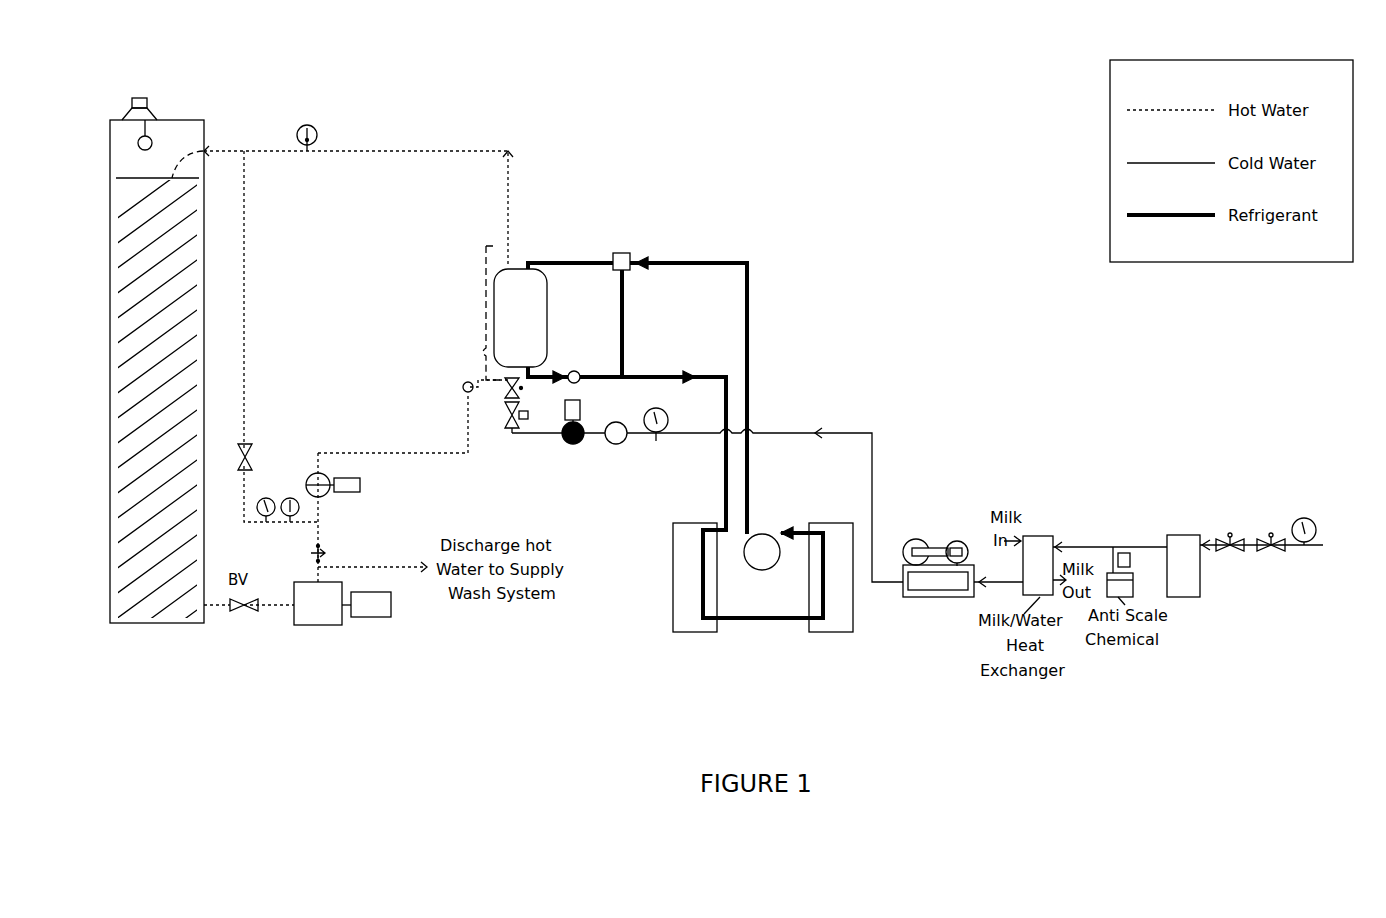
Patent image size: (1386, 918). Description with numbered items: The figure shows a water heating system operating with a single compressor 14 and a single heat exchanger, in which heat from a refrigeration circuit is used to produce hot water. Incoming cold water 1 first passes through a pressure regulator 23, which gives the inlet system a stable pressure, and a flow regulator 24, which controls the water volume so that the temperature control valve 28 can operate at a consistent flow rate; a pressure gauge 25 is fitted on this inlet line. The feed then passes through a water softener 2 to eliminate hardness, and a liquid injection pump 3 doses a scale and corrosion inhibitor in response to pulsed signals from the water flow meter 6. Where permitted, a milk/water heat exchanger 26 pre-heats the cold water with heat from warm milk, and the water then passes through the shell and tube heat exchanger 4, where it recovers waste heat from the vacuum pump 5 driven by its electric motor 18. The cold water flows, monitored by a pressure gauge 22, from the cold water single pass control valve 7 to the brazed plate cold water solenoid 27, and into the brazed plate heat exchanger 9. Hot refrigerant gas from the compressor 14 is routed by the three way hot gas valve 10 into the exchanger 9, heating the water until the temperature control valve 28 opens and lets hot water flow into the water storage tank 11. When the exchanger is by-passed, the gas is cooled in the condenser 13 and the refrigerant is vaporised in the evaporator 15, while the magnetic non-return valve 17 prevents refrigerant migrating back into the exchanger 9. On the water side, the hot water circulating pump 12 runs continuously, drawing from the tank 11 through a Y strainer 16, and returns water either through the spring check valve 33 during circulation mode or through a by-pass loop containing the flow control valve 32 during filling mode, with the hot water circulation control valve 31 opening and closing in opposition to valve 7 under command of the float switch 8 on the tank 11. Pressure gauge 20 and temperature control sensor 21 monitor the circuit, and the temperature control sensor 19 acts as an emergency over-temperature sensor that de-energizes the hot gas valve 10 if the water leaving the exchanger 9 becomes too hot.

The incoming cold water 1 is at (1354, 546).
The water softener 2 is at (1170, 566).
The liquid injection pump 3 is at (1129, 576).
The shell & tube heat exchanger 4 is at (920, 597).
The vacuum pump 5 is at (955, 541).
The water flow meter 6 is at (615, 444).
The cold water single pass control valve 7 is at (572, 445).
The float switch 8 is at (139, 98).
The brazed plate heat exchanger 9 is at (494, 313).
The three way hot gas valve 10 is at (621, 252).
The water storage tank 11 is at (160, 424).
The hot water circulating pump 12 is at (342, 603).
The condenser 13 is at (677, 562).
The compressor 14 is at (759, 570).
The evaporator 15 is at (850, 553).
The Y strainer 16 is at (311, 553).
The magnetic non-return valve 17 is at (577, 370).
The electric motor for vacuum pump 18 is at (916, 540).
The temperature control sensor #2 19 is at (307, 127).
The pressure gauge #1 20 is at (266, 500).
The temperature control sensor #1 21 is at (291, 500).
The pressure gauge #2 22 is at (656, 432).
The pressure regulator 23 is at (1271, 553).
The flow regulator 24 is at (1230, 553).
The pressure gauge #3 25 is at (1304, 542).
The milk/water heat exchanger 26 is at (1034, 533).
The brazed plate cold water solenoid 27 is at (506, 415).
The temperature control valve 28 is at (524, 388).
The hot water circulation control valve 31 is at (360, 486).
The flow control valve 32 is at (240, 457).
The spring check valve 33 is at (463, 388).